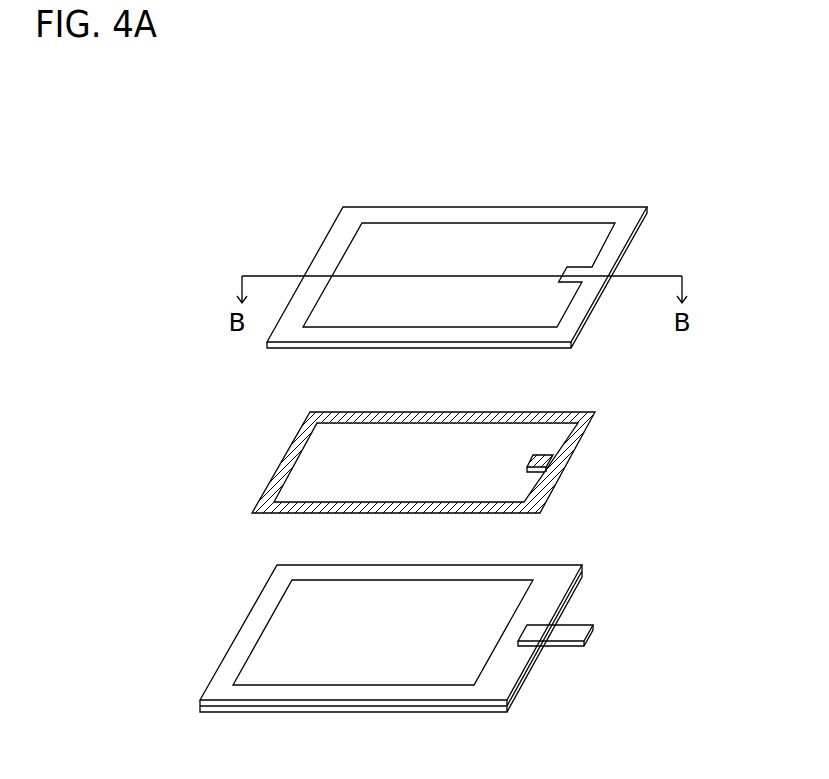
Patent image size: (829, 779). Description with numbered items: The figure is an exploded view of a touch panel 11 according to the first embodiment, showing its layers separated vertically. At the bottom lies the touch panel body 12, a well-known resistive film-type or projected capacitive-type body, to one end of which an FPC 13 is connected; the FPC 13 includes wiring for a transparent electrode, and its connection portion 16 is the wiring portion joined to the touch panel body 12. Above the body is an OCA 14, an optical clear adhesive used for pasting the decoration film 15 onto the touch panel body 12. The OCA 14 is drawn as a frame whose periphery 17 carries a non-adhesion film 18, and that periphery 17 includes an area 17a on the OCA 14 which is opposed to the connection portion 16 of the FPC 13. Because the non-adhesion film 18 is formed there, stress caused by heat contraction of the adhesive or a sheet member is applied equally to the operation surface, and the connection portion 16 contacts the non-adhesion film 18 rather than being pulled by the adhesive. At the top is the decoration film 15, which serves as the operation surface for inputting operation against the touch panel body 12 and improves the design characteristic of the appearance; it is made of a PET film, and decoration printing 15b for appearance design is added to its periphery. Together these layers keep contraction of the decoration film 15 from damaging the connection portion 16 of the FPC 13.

The touch panel 11 is at (452, 126).
The touch panel body 12 is at (414, 638).
The FPC 13 is at (580, 635).
The OCA 14 is at (434, 443).
The decoration film 15 is at (485, 277).
The decoration printing 15b is at (613, 248).
The connection portion 16 is at (532, 630).
The periphery 17 is at (467, 443).
The area 17a is at (543, 462).
The non-adhesion film 18 is at (555, 412).